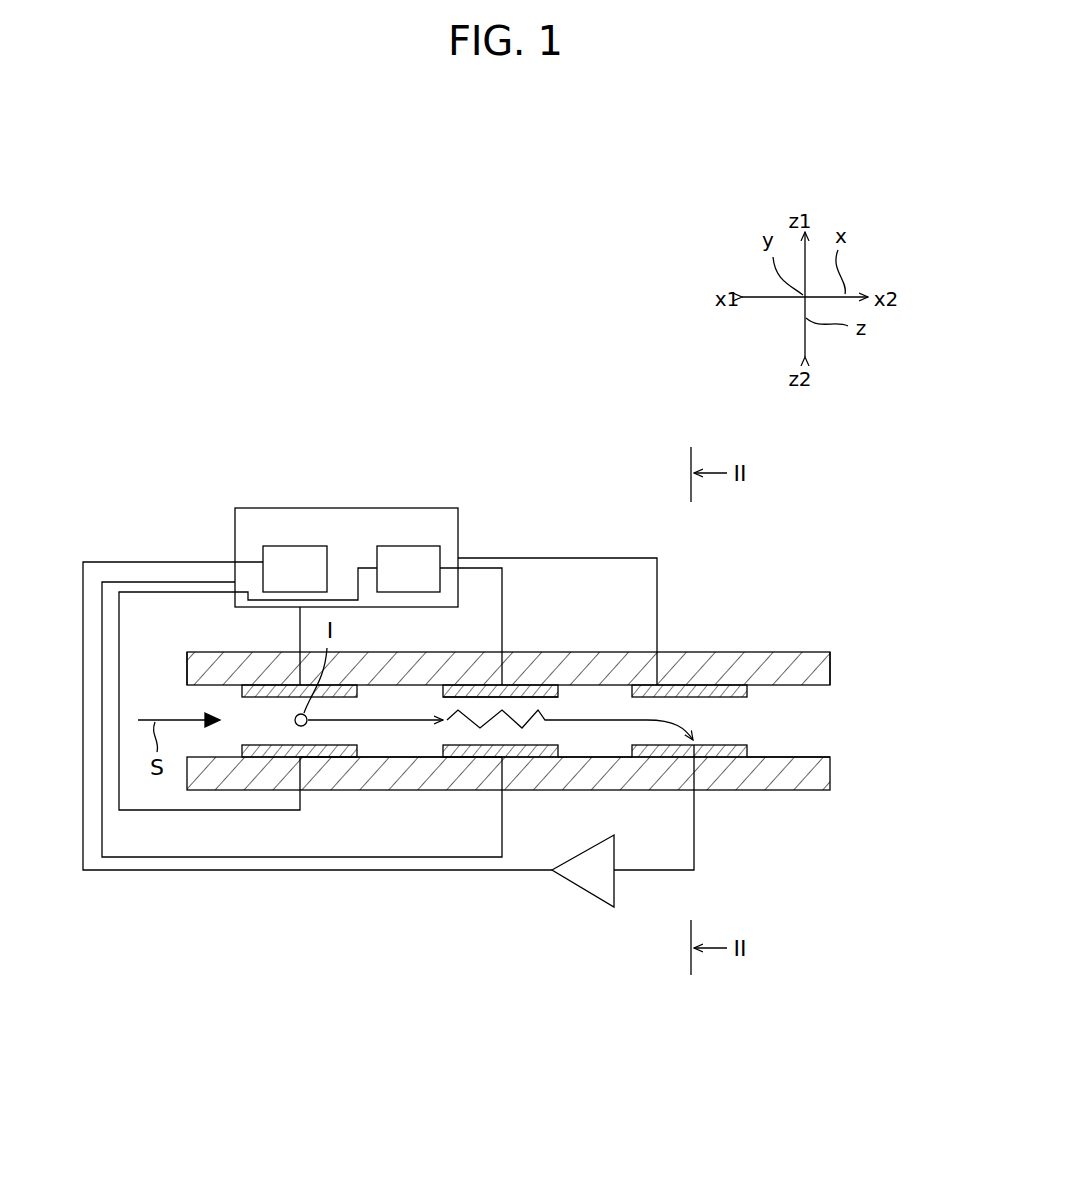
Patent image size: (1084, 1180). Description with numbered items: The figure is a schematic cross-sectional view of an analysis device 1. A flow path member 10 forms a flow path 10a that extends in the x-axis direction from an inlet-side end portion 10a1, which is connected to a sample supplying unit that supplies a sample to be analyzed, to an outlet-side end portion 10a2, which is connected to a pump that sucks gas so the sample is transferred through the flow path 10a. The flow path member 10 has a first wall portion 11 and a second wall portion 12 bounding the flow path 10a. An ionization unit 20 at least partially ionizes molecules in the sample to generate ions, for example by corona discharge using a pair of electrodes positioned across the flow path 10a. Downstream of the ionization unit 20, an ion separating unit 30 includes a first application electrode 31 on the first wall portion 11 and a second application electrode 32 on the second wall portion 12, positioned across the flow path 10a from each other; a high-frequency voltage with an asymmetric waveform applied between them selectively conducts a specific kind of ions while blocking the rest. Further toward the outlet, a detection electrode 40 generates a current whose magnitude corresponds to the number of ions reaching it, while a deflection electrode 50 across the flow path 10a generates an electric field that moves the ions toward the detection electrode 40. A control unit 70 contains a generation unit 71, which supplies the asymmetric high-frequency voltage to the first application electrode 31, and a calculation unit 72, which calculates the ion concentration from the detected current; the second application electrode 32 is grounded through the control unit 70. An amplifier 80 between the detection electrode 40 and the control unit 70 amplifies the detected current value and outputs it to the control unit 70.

The analysis device 1 is at (583, 490).
The flow path member 10 is at (546, 692).
The flow path 10a is at (813, 754).
The end portion 10a1 is at (217, 686).
The end portion 10a2 is at (808, 686).
The first wall portion 11 is at (788, 648).
The second wall portion 12 is at (800, 792).
The ionization unit 20 is at (306, 760).
The ion separating unit 30 is at (531, 681).
The first application electrode 31 is at (477, 684).
The second application electrode 32 is at (468, 760).
The detection electrode 40 is at (724, 760).
The deflection electrode 50 is at (688, 684).
The control unit 70 is at (380, 527).
The generation unit 71 is at (412, 545).
The calculation unit 72 is at (297, 545).
The amplifier 80 is at (585, 895).